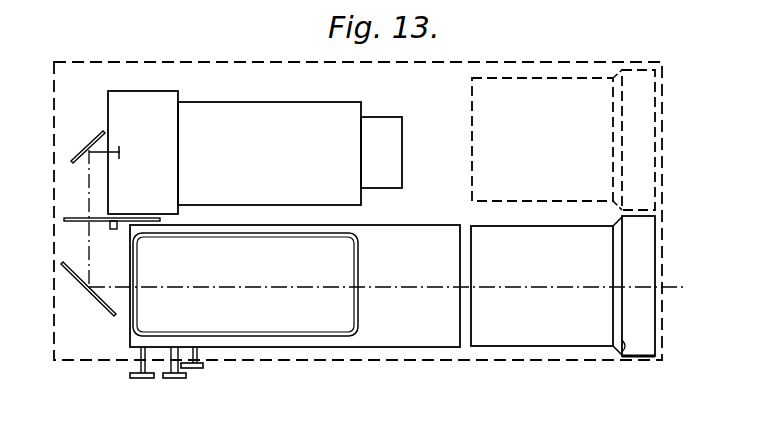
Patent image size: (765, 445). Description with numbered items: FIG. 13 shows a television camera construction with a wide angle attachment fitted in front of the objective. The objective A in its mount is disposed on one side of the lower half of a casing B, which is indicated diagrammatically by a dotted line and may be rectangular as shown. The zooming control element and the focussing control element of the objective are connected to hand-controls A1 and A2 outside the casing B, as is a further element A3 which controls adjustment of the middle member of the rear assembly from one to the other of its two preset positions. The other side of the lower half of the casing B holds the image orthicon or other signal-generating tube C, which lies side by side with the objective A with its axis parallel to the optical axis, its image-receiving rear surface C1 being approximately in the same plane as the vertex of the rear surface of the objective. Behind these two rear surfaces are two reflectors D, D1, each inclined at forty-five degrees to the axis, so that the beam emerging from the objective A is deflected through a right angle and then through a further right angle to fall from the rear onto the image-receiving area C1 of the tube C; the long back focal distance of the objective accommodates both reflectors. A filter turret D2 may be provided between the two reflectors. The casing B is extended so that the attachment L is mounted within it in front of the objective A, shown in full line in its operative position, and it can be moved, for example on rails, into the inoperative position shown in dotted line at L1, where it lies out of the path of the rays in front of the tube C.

The objective A is at (416, 331).
The hand-control for zooming control element A1 is at (134, 380).
The hand-control for focussing control element A2 is at (168, 381).
The element for controlling adjustment of the middle member of the rear assembly A3 is at (196, 372).
The casing B is at (500, 62).
The signal-generating tube C is at (272, 162).
The image-receiving rear surface C1 is at (120, 152).
The reflector D is at (76, 258).
The reflector D1 is at (88, 143).
The filter turret D2 is at (70, 216).
The wide angle attachment L is at (622, 352).
The inoperative position of attachment L1 is at (625, 72).